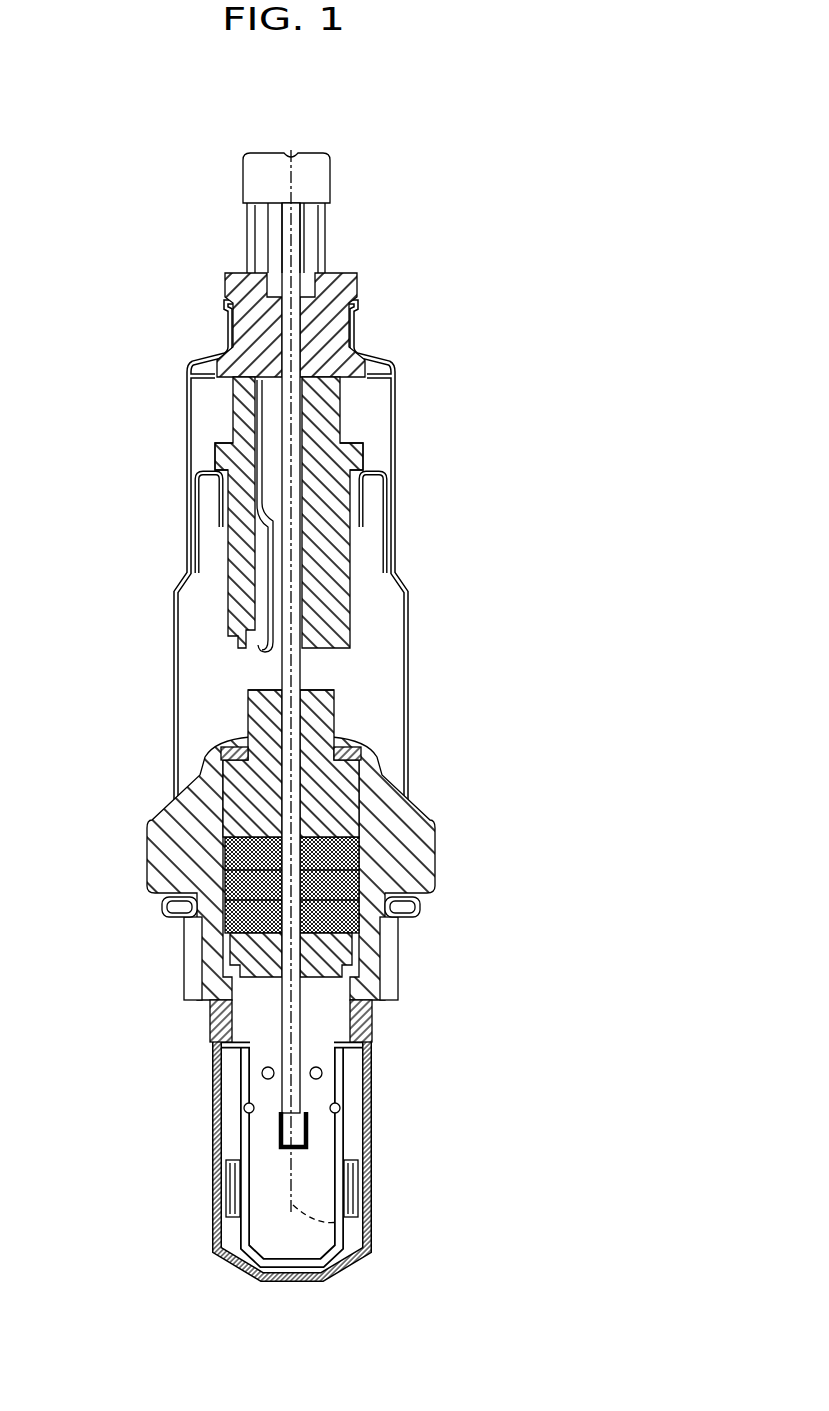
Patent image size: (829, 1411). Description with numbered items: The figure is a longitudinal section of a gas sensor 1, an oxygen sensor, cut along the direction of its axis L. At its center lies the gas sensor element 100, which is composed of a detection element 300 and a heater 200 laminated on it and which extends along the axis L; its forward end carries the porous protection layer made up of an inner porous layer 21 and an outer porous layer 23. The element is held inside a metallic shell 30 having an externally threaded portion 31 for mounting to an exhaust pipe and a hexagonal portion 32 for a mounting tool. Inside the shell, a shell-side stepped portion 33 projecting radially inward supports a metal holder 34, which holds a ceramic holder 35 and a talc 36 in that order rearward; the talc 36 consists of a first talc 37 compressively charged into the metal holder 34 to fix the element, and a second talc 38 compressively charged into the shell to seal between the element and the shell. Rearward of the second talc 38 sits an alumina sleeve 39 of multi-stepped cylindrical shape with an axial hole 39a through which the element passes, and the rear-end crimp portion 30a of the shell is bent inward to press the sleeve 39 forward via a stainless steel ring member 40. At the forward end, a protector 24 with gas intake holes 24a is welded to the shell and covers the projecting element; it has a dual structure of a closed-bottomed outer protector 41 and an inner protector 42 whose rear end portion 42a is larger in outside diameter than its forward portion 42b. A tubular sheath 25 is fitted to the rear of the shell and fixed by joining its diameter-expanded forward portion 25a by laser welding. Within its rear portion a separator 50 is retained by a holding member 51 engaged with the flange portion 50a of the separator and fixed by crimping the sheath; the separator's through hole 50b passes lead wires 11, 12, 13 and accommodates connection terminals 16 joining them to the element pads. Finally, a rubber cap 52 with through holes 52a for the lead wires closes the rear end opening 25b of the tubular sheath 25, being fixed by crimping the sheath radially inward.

The gas sensor 1 is at (542, 320).
The lead wire 11 is at (282, 258).
The lead wire 12 is at (247, 222).
The lead wire 13 is at (316, 248).
The connection terminals 16 is at (298, 503).
The inner porous layer 21 is at (263, 1217).
The outer porous layer 23 is at (290, 1210).
The protector 24 is at (352, 1288).
The gas intake holes 24a is at (324, 1071).
The tubular sheath 25 is at (185, 419).
The diameter-expanded forward portion 25a is at (404, 797).
The rear end opening 25b is at (348, 320).
The metallic shell 30 is at (439, 871).
The rear-end crimp portion 30a is at (358, 742).
The externally threaded portion 31 is at (394, 967).
The hexagonal portion 32 is at (439, 836).
The shell-side stepped portion 33 is at (384, 951).
The metal holder 34 is at (213, 1000).
The ceramic holder 35 is at (191, 968).
The talc 36 is at (72, 862).
The first talc 37 is at (191, 920).
The second talc 38 is at (160, 877).
The sleeve 39 is at (222, 778).
The axial hole 39a is at (288, 710).
The ring member 40 is at (362, 749).
The outer protector 41 is at (378, 1192).
The inner protector 42 is at (240, 1100).
The rear end portion 42a is at (232, 1040).
The forward portion 42b is at (232, 1148).
The separator 50 is at (233, 392).
The flange portion 50a is at (364, 458).
The through hole 50b is at (300, 438).
The holding member 51 is at (194, 485).
The rubber cap 52 is at (262, 330).
The through holes 52a is at (300, 342).
The gas sensor element 100 is at (306, 1135).
The heater 200 is at (308, 736).
The detection element 300 is at (308, 736).
The axis L is at (383, 1240).